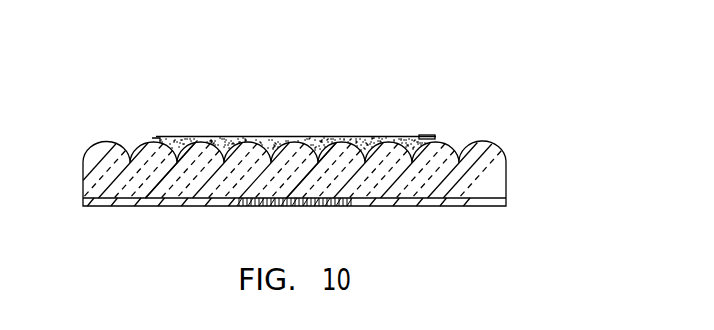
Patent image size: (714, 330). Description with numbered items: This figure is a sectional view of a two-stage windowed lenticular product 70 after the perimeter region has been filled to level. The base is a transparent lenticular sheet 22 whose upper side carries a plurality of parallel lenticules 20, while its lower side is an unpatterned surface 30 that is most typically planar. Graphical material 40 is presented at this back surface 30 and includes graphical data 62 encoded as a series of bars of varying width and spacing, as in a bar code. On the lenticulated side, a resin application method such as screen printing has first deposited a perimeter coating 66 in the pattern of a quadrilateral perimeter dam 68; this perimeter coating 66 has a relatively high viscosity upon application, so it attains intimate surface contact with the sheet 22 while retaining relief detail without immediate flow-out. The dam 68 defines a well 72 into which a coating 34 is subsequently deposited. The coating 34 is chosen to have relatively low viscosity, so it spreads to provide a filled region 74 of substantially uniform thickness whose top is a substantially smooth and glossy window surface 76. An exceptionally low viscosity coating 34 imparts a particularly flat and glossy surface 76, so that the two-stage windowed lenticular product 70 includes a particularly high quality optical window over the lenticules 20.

The lenticules 20 is at (155, 141).
The transparent lenticular sheet 22 is at (525, 179).
The unpatterned surface 30 is at (473, 202).
The coating 34 is at (215, 141).
The graphical material 40 is at (403, 206).
The graphical data 62 is at (270, 206).
The perimeter coating 66 is at (437, 141).
The quadrilateral perimeter dam 68 is at (156, 144).
The two-stage windowed lenticular product 70 is at (324, 92).
The well 72 is at (413, 137).
The filled region 74 is at (258, 124).
The window surface 76 is at (363, 137).